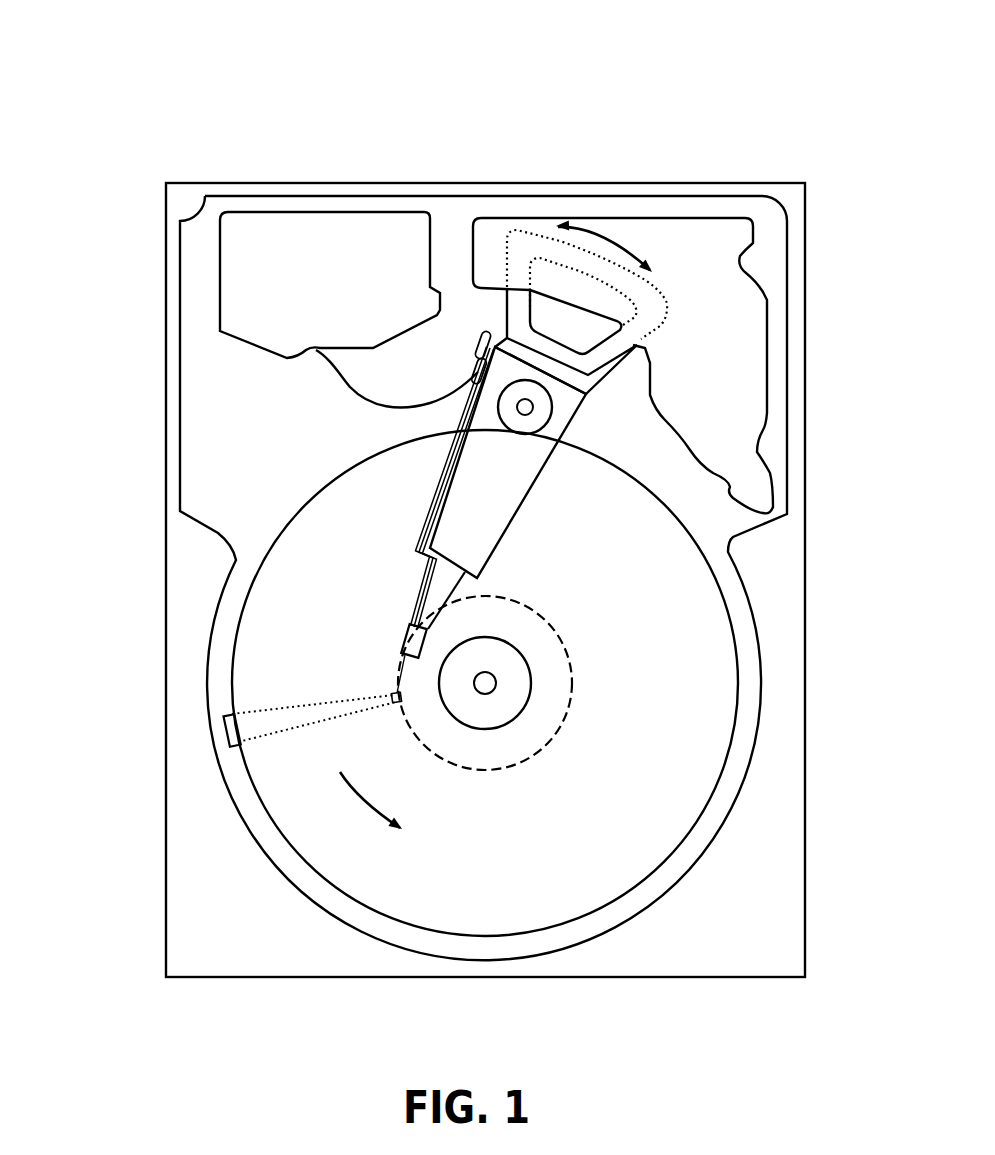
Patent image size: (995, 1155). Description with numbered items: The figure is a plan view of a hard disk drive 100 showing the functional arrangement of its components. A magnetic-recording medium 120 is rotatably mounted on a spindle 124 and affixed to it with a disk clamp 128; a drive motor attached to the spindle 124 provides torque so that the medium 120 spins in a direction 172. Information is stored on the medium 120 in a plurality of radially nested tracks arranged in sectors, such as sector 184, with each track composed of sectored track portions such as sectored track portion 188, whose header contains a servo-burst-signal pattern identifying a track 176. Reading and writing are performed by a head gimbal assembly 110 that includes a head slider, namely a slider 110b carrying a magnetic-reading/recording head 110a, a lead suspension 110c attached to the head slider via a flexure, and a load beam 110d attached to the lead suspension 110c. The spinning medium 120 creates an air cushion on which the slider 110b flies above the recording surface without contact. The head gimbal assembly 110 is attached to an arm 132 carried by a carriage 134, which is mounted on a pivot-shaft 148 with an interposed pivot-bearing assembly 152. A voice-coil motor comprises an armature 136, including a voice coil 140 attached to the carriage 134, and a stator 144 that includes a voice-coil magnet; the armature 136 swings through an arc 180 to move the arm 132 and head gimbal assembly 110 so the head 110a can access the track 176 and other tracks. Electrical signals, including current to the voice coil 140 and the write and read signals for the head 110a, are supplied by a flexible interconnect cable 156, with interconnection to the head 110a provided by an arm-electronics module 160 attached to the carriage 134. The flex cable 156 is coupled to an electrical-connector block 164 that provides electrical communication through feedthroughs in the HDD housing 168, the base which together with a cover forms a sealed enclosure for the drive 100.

The hard disk drive 100 is at (94, 62).
The head gimbal assembly 110 is at (263, 502).
The magnetic-reading/recording head 110a is at (400, 654).
The slider 110b is at (425, 624).
The lead suspension 110c is at (425, 588).
The load beam 110d is at (415, 556).
The magnetic-recording medium 120 is at (667, 635).
The spindle 124 is at (496, 684).
The disk clamp 128 is at (523, 708).
The arm 132 is at (480, 522).
The carriage 134 is at (543, 438).
The armature 136 is at (503, 325).
The voice coil 140 is at (520, 300).
The stator 144 is at (733, 310).
The pivot-shaft 148 is at (533, 407).
The pivot-bearing assembly 152 is at (537, 418).
The flexible interconnect cable 156 is at (345, 383).
The arm-electronics module 160 is at (477, 373).
The electrical-connector block 164 is at (245, 283).
The HDD housing 168 is at (790, 187).
The direction 172 is at (375, 812).
The track 176 is at (558, 636).
The arc 180 is at (606, 236).
The sector 184 is at (222, 728).
The sectored track portion 188 is at (392, 697).